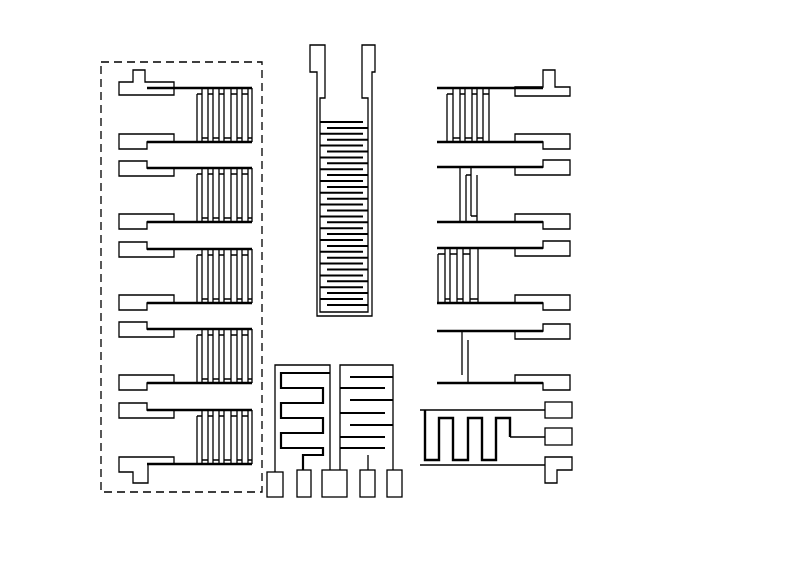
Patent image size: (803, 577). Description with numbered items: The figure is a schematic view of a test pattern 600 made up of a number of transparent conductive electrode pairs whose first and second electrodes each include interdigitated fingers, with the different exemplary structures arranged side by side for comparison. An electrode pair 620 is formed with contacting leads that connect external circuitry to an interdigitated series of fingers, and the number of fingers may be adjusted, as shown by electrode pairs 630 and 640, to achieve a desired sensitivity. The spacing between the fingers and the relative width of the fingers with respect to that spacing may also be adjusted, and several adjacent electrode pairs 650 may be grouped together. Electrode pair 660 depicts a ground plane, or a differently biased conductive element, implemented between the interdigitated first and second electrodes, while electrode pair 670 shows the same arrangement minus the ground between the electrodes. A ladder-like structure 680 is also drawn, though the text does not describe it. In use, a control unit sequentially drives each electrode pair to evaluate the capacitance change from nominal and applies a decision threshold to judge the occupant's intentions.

The test pattern 600 is at (632, 139).
The electrode pair 620 is at (172, 112).
The electrode pair 630 is at (494, 192).
The electrode pair 640 is at (481, 358).
The adjacent electrode pairs 650 is at (98, 375).
The electrode pair 660 is at (522, 425).
The electrode pair 670 is at (401, 441).
The ladder resistor element 680 is at (384, 135).